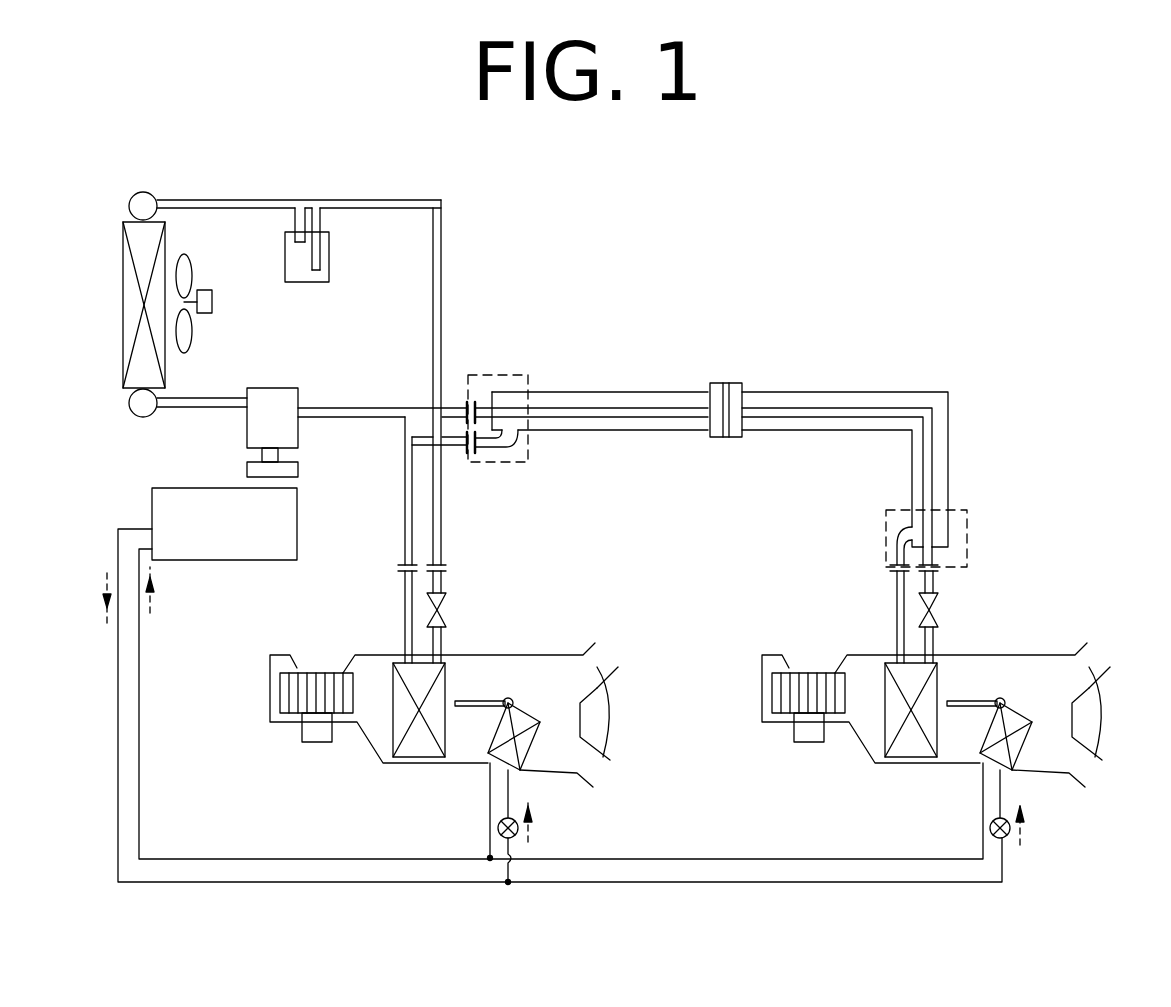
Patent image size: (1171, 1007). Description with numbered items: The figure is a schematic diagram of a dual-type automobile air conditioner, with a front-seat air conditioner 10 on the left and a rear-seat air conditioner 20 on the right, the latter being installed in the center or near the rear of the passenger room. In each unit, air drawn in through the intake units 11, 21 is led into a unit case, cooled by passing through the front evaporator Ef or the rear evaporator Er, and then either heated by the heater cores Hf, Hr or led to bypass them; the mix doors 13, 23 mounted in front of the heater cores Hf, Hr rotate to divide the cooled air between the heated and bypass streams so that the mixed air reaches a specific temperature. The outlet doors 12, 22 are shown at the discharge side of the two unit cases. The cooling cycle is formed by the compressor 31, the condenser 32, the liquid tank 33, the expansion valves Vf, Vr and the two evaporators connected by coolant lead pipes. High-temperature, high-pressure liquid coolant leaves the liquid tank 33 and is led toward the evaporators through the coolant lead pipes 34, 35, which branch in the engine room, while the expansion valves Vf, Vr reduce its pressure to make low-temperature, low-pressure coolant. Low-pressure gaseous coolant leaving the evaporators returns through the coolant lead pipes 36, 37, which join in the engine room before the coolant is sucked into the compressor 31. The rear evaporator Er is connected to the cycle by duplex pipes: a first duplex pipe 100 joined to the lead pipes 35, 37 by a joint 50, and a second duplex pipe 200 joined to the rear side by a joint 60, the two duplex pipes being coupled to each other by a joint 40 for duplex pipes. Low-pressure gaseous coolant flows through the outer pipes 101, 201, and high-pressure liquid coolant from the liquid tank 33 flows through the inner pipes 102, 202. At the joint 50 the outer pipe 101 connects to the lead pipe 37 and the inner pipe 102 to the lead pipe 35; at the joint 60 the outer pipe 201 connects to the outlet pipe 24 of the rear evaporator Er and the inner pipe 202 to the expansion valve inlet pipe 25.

The air conditioner 10 is at (448, 724).
The intake unit 11 is at (285, 722).
The front outlet door 12 is at (615, 713).
The mix door 13 is at (466, 702).
The air conditioner 20 is at (950, 699).
The intake unit 21 is at (799, 726).
The rear outlet door 22 is at (1109, 713).
The mix door 23 is at (978, 685).
The outlet pipe 24 is at (872, 614).
The expansion valve inlet pipe 25 is at (966, 586).
The compressor 31 is at (270, 402).
The condenser 32 is at (123, 298).
The liquid tank 33 is at (310, 278).
The coolant lead pipe 34 is at (432, 432).
The coolant lead pipe 35 is at (456, 408).
The coolant lead pipe 36 is at (405, 488).
The coolant lead pipe 37 is at (453, 450).
The joint for duplex pipes 40 is at (723, 380).
The joint 50 is at (505, 387).
The joint 60 is at (970, 517).
The first duplex pipe 100 is at (591, 372).
The outer pipe 101 is at (688, 342).
The inner pipe 102 is at (660, 412).
The second duplex pipe 200 is at (845, 431).
The outer pipe 201 is at (932, 342).
The inner pipe 202 is at (897, 410).
The expansion valve Vf is at (452, 614).
The expansion valve Vr is at (946, 617).
The front evaporator Ef is at (420, 743).
The rear evaporator Er is at (911, 741).
The heater core Hf is at (540, 760).
The heater core Hr is at (1028, 759).